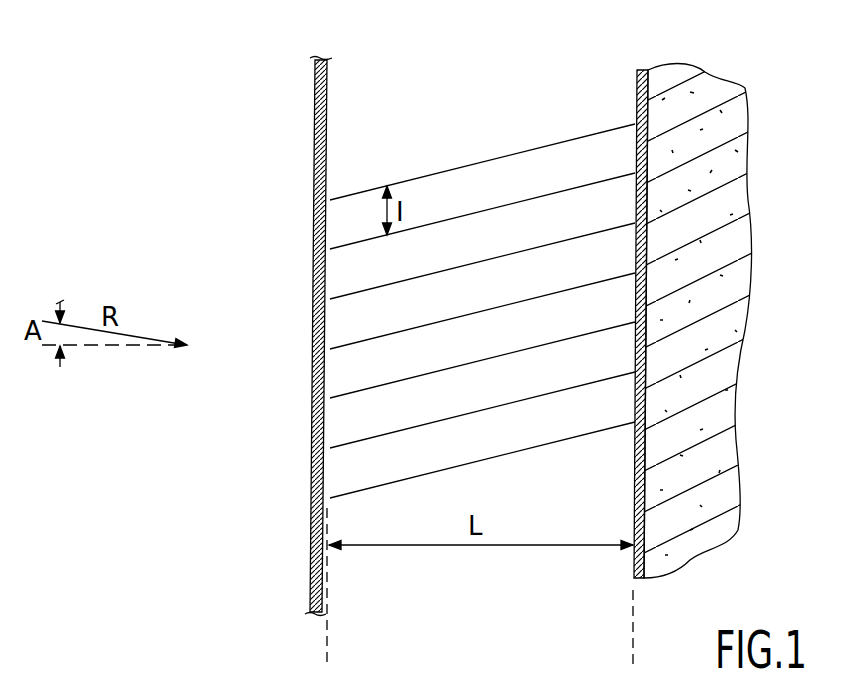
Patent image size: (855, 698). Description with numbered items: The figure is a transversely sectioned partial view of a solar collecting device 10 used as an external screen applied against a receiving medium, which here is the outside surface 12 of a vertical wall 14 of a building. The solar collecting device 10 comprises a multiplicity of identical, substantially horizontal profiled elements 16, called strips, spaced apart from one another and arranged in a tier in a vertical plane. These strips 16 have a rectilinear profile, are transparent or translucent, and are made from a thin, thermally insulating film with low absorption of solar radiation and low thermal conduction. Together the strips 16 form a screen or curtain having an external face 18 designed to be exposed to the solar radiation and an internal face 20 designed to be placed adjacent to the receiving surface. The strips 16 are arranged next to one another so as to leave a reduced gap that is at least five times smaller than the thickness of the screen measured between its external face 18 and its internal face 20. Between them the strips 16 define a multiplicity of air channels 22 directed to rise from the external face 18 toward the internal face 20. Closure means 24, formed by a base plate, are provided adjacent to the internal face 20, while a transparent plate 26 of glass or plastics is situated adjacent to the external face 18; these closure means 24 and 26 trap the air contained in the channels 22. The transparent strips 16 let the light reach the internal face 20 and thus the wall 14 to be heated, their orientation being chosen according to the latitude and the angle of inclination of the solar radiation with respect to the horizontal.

The solar collecting device 10 is at (393, 135).
The outside surface 12 is at (633, 477).
The vertical wall 14 is at (700, 405).
The profiled elements 16 is at (512, 250).
The external face 18 is at (327, 642).
The internal face 20 is at (633, 614).
The air channels 22 is at (317, 330).
The closure means 24 is at (634, 198).
The transparent plate 26 is at (315, 139).